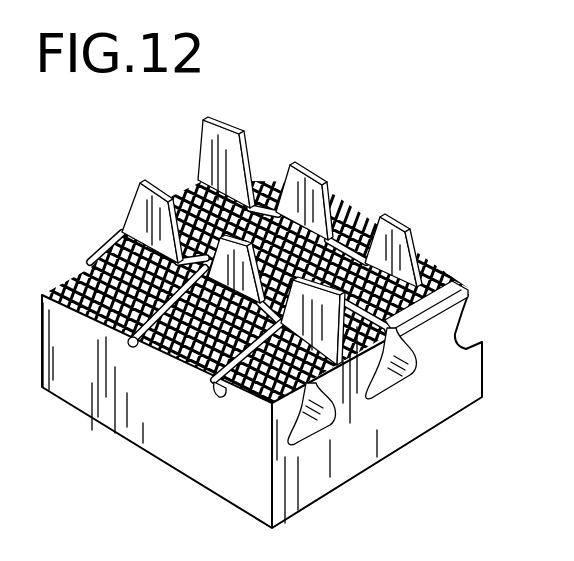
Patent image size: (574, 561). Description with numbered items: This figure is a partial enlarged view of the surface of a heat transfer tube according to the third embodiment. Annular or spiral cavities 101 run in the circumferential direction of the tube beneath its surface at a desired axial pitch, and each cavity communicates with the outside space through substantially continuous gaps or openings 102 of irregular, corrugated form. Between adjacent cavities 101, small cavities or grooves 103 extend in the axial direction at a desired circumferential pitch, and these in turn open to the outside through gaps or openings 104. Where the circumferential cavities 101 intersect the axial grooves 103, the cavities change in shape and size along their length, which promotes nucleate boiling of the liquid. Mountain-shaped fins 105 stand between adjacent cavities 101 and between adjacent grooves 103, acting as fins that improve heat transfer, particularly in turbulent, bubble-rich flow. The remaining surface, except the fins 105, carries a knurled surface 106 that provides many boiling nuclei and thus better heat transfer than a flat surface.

The annular or spiral cavities 101 is at (390, 383).
The gaps or openings 102 is at (427, 273).
The small cavities or grooves 103 is at (220, 395).
The gaps or openings 104 is at (213, 377).
The mountain-shaped fins 105 is at (397, 227).
The knurled surface 106 is at (352, 218).